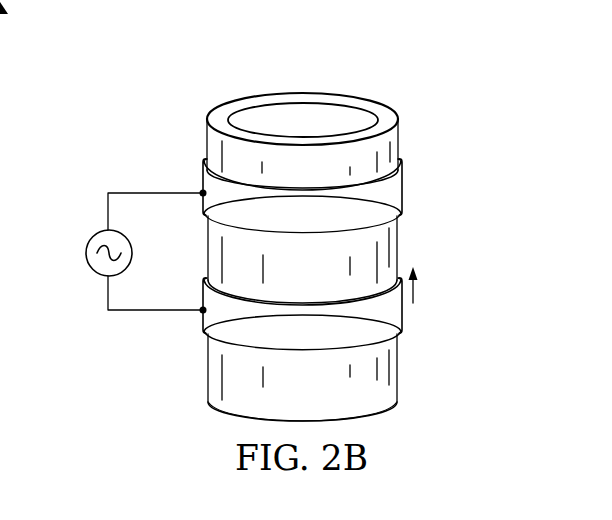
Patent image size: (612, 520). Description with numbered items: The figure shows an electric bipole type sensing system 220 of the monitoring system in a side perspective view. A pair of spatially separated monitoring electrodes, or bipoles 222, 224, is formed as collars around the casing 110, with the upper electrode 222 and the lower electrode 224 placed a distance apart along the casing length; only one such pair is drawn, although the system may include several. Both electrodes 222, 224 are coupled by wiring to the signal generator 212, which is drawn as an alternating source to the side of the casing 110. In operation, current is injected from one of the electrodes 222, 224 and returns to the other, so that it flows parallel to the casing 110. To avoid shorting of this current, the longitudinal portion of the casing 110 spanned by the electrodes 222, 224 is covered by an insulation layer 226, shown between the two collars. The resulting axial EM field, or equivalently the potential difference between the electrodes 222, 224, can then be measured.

The electric bipole type sensing system 220 is at (329, 219).
The monitoring electrode 222 is at (388, 192).
The insulation layer 226 is at (398, 248).
The monitoring electrode 224 is at (393, 312).
The casing 110 is at (398, 375).
The signal generator 212 is at (86, 252).